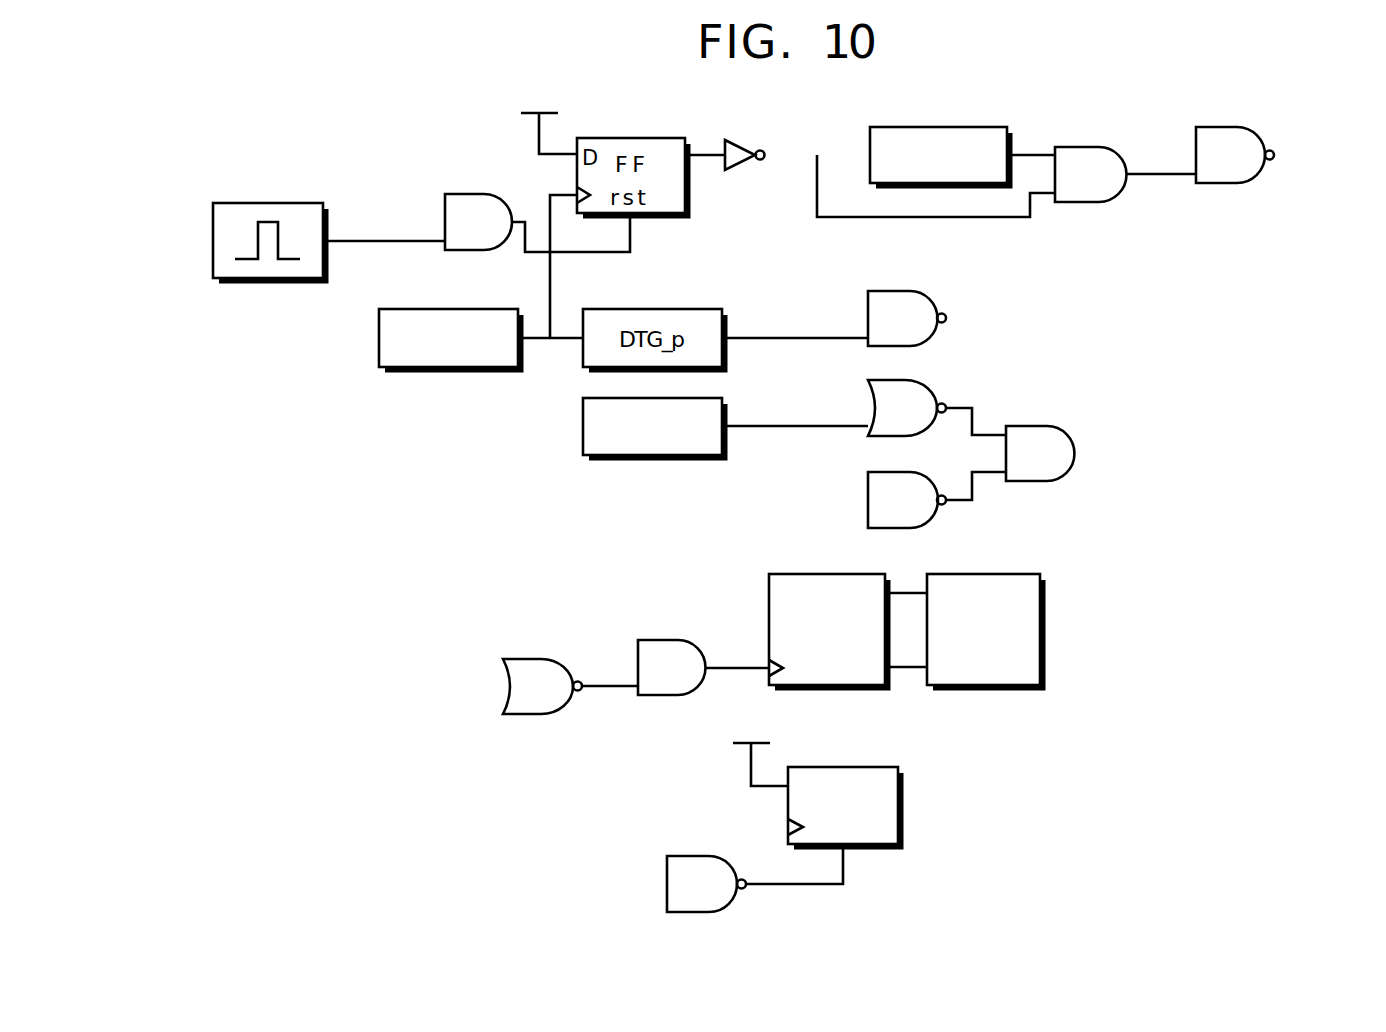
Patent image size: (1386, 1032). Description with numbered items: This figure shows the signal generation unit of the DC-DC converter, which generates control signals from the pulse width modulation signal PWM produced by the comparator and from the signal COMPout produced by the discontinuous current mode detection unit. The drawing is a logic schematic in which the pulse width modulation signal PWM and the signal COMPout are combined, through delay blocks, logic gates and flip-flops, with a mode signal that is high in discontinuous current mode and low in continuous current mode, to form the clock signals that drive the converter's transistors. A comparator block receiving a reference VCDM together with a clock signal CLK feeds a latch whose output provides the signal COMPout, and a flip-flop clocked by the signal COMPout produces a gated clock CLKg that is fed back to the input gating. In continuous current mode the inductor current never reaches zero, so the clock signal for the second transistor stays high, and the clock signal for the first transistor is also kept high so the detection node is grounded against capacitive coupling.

The signal COMPout is at (667, 863).
The pulse width modulation signal PWM is at (505, 668).
The DCM reference voltage VCDM is at (769, 592).
The clock signal CLK is at (638, 649).
The gated clock signal CLKg is at (937, 786).